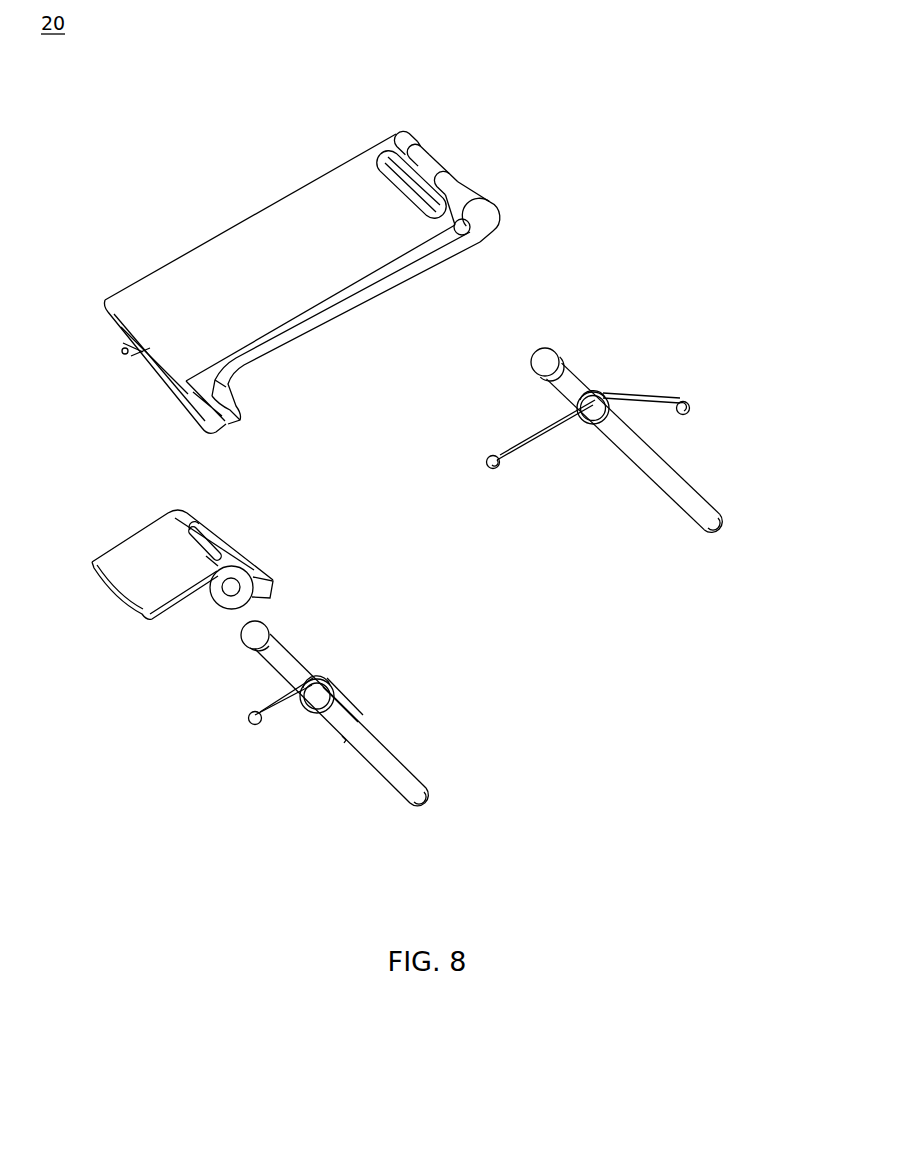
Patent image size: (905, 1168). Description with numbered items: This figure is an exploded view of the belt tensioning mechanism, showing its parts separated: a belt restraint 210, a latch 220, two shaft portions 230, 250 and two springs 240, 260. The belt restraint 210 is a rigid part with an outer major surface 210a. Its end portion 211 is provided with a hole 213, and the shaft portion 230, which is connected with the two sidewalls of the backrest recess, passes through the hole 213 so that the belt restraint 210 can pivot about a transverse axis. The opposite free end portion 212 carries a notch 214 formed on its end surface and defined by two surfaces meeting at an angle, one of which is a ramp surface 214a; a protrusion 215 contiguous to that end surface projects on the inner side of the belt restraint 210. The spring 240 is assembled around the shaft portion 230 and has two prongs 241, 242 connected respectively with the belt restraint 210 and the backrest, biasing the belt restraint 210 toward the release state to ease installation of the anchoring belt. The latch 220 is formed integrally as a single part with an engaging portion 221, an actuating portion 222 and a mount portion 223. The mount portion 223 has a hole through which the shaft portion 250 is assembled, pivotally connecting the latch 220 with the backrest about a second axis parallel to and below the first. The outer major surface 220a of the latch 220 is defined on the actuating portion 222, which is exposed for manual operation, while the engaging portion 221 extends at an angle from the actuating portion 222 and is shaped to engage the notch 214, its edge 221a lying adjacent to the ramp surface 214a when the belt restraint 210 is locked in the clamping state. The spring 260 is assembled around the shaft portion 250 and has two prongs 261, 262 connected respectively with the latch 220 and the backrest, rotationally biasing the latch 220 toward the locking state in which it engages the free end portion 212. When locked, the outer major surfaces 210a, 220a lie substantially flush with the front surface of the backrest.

The belt restraint 210 is at (234, 280).
The outer major surface 210a is at (316, 213).
The end portion 211 is at (400, 140).
The free end portion 212 is at (130, 300).
The hole 213 is at (496, 224).
The notch 214 is at (150, 364).
The ramp surface 214a is at (163, 373).
The protrusion 215 is at (228, 426).
The latch 220 is at (217, 581).
The outer major surface 220a is at (137, 550).
The engaging portion 221 is at (246, 552).
The edge 221a is at (275, 590).
The actuating portion 222 is at (120, 590).
The mount portion 223 is at (220, 598).
The shaft portion 230 is at (652, 468).
The spring 240 is at (604, 392).
The prong 241 is at (530, 437).
The prong 242 is at (661, 392).
The shaft portion 250 is at (375, 750).
The spring 260 is at (321, 747).
The prong 261 is at (358, 713).
The prong 262 is at (262, 724).